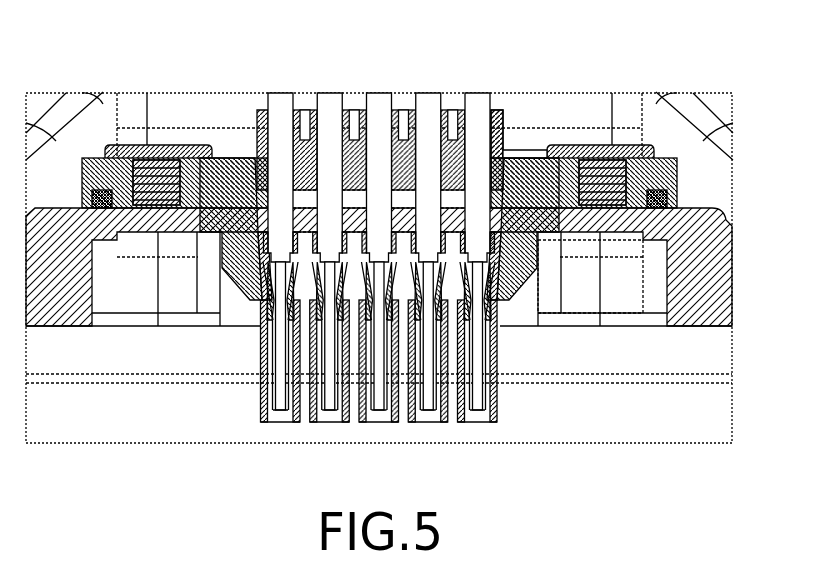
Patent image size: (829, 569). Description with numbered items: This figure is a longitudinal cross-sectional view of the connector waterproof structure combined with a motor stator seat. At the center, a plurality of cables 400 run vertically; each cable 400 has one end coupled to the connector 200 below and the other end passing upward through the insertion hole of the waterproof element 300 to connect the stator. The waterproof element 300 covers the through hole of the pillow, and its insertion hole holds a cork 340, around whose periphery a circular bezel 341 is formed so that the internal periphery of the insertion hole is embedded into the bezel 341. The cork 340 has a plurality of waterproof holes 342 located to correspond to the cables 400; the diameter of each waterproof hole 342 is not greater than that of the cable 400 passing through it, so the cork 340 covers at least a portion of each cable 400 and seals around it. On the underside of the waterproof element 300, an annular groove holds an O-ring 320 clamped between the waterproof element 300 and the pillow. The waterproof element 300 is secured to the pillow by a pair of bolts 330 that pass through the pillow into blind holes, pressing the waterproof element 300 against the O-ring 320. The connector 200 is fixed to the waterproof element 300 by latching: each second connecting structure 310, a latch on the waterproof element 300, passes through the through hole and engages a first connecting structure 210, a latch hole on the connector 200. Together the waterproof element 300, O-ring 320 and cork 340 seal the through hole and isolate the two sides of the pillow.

The connector 200 is at (328, 371).
The first connecting structure 210 is at (250, 298).
The waterproof element 300 is at (223, 157).
The second connecting structure 310 is at (233, 282).
The O-ring 320 is at (665, 197).
The bolt 330 is at (618, 248).
The cork 340 is at (505, 150).
The bezel 341 is at (510, 158).
The waterproof hole 342 is at (356, 108).
The cable 400 is at (275, 105).